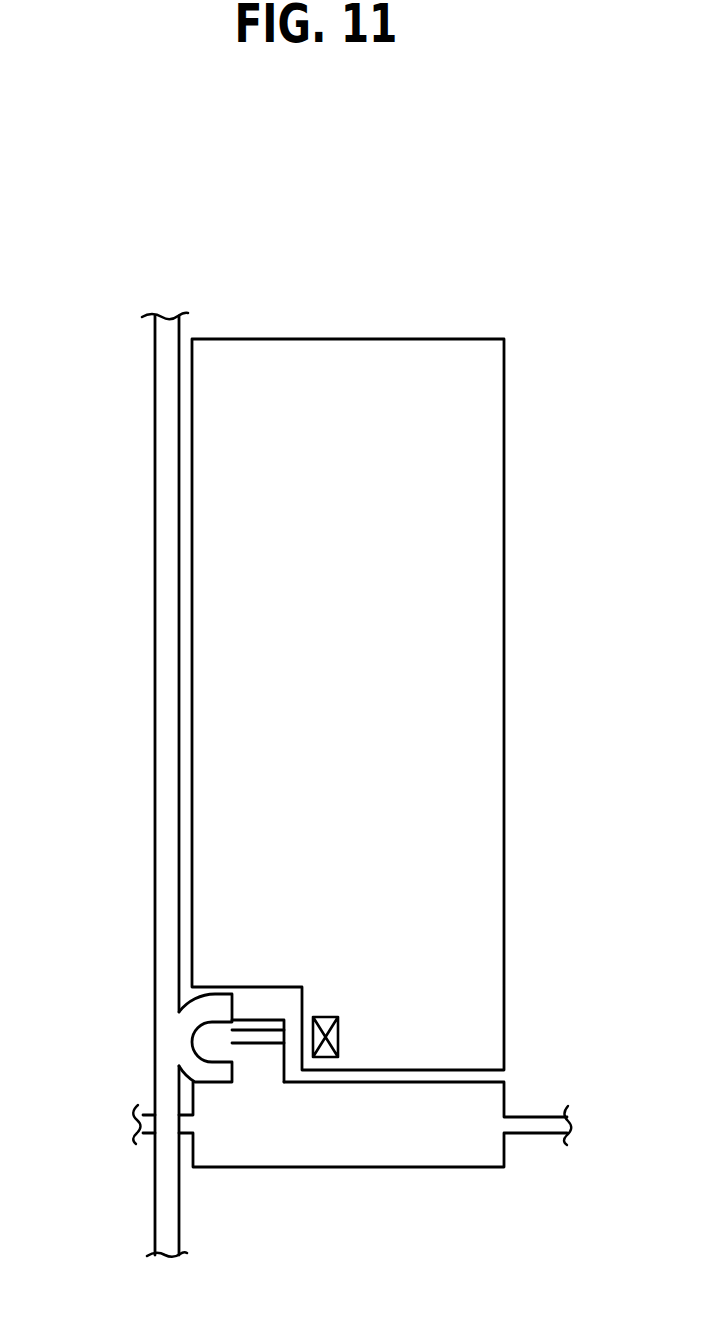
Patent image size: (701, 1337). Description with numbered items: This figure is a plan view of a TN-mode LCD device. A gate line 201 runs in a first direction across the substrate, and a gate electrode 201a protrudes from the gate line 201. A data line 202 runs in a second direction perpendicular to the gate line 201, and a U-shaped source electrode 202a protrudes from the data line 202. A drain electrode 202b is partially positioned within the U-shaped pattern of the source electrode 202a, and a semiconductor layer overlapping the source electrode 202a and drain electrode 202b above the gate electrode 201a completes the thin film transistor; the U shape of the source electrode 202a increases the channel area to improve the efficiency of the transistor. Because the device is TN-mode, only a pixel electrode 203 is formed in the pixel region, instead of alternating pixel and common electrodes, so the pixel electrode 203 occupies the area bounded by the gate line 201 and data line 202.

The gate line 201 is at (318, 1152).
The gate electrode 201a is at (257, 1082).
The data line 202 is at (168, 1218).
The source electrode 202a is at (212, 1008).
The drain electrode 202b is at (258, 1037).
The pixel electrode 203 is at (472, 557).